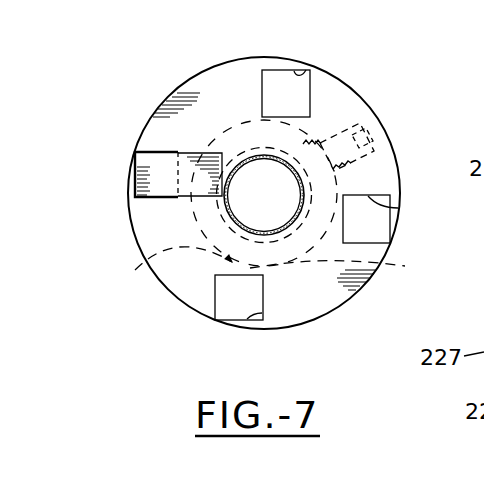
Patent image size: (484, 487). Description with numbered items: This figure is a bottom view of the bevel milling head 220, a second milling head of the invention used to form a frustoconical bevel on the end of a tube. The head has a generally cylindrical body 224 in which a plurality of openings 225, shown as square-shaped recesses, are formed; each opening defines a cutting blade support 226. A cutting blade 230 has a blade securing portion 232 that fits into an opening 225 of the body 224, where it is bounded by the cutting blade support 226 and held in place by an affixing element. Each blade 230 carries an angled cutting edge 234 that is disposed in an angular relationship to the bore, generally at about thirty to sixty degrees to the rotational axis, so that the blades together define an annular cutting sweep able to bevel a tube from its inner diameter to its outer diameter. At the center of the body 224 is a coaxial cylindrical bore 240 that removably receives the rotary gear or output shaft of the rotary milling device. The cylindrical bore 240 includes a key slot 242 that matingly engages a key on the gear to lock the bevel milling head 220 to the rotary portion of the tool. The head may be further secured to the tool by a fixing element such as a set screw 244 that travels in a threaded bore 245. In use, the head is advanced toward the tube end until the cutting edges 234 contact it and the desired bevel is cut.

The bevel milling head 220 is at (265, 174).
The cylindrical body 224 is at (347, 82).
The openings 225 is at (277, 78).
The cutting blade support 226 is at (306, 70).
The cutting blade 230 is at (158, 150).
The blade securing portion 232 is at (143, 207).
The angled cutting edge 234 is at (142, 168).
The cylindrical bore 240 is at (135, 270).
The key slot 242 is at (405, 266).
The set screw 244 is at (366, 126).
The threaded bore 245 is at (340, 170).